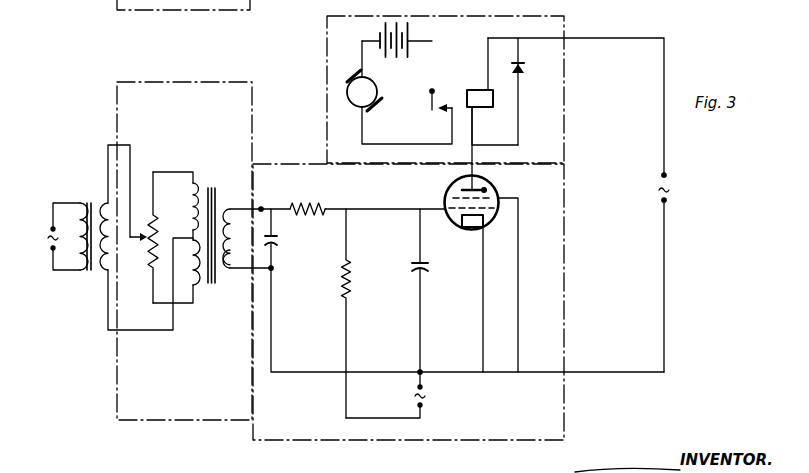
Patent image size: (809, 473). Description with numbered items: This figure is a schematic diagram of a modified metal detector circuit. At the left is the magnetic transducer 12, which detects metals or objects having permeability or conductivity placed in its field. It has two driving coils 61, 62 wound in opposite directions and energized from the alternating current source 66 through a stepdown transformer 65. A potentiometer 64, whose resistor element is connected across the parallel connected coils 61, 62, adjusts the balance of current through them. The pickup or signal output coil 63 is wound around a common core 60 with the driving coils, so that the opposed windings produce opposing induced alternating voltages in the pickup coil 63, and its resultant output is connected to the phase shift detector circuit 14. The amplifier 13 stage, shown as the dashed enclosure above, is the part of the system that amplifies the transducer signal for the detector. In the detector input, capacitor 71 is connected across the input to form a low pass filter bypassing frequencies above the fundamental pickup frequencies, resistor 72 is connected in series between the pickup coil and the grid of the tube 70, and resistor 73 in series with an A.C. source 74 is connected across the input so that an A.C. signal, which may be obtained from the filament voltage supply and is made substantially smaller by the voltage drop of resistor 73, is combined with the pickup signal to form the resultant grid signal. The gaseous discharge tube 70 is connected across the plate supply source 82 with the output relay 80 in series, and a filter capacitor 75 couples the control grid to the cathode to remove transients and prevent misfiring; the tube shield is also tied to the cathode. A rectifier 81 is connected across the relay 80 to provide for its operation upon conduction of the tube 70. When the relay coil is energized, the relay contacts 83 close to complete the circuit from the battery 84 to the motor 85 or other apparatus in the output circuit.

The magnetic transducer 12 is at (251, 83).
The amplifier 13 is at (548, 14).
The phase shift detector 14 is at (405, 441).
The common core 60 is at (215, 196).
The driving coil 61 is at (199, 176).
The driving coil 62 is at (200, 297).
The pickup coil 63 is at (235, 270).
The potentiometer 64 is at (143, 237).
The stepdown transformer 65 is at (90, 200).
The alternating current source 66 is at (52, 236).
The gaseous discharge tube 70 is at (446, 193).
The capacitor 71 is at (275, 243).
The resistor 72 is at (310, 205).
The resistor 73 is at (353, 283).
The A.C. source 74 is at (425, 395).
The filter capacitor 75 is at (431, 267).
The output relay 80 is at (494, 100).
The rectifier 81 is at (527, 67).
The plate supply source 82 is at (668, 202).
The relay contacts 83 is at (436, 103).
The battery 84 is at (412, 50).
The motor 85 is at (353, 105).